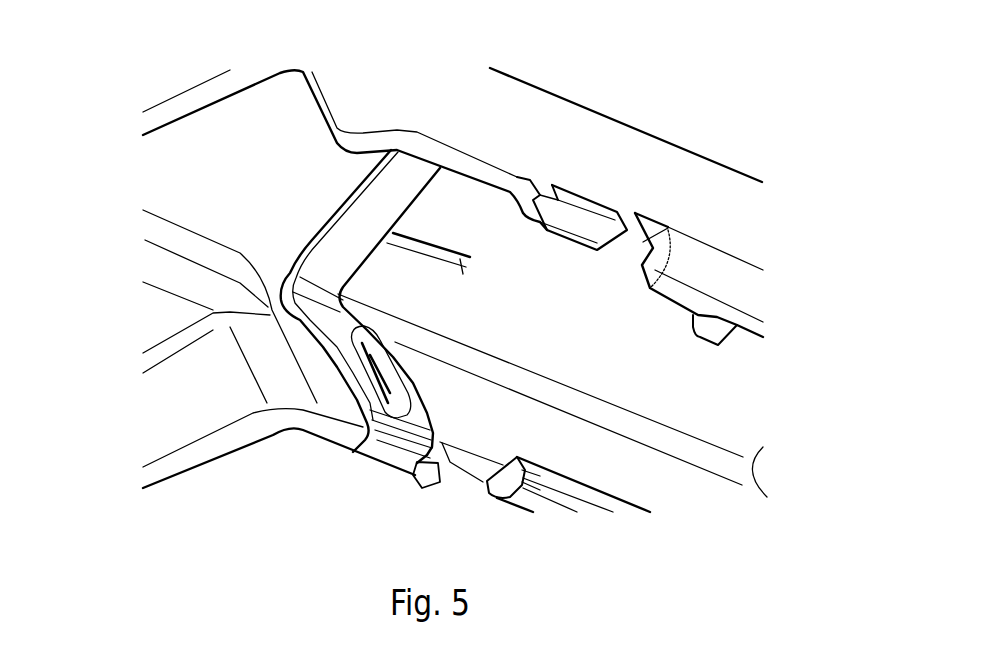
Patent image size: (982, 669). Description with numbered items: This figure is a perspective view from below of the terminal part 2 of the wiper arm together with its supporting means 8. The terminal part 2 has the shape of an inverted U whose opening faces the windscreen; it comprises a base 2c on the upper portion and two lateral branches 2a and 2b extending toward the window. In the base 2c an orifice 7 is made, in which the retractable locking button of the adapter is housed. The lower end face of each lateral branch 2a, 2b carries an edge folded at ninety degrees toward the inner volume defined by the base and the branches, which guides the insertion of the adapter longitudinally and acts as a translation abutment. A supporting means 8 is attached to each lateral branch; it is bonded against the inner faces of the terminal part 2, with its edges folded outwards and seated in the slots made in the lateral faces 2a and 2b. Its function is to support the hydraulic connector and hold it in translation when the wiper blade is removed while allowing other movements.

The terminal part 2 is at (547, 123).
The lateral branch 2a is at (731, 223).
The lateral branch 2b is at (662, 488).
The base 2c is at (731, 372).
The orifice 7 is at (463, 243).
The supporting means 8 is at (577, 220).